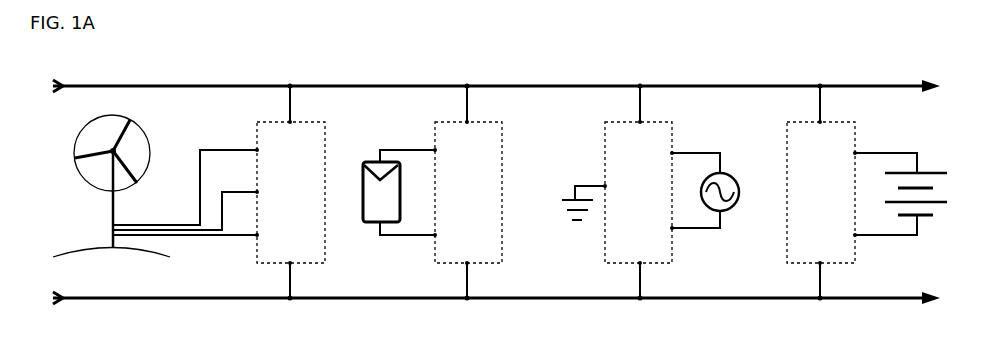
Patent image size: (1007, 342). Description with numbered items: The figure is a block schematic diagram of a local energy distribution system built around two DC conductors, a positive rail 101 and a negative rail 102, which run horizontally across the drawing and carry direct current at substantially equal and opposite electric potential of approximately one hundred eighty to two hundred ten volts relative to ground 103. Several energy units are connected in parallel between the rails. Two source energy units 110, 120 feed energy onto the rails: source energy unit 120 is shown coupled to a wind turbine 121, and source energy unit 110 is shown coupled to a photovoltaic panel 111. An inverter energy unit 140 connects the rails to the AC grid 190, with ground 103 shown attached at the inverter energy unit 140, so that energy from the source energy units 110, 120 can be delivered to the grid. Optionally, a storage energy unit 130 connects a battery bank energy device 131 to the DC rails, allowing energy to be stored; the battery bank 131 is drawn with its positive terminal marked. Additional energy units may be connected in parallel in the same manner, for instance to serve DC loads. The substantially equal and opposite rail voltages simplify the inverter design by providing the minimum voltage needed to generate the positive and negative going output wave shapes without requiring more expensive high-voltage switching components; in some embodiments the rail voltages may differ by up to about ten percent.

The positive rail 101 is at (496, 80).
The negative rail 102 is at (496, 304).
The ground 103 is at (584, 196).
The source energy unit 110 is at (456, 192).
The photovoltaic panel 111 is at (400, 192).
The source energy unit 120 is at (279, 192).
The wind turbine 121 is at (156, 186).
The storage energy unit 130 is at (809, 192).
The battery bank energy device 131 is at (900, 195).
The inverter energy unit 140 is at (627, 192).
The AC grid 190 is at (710, 190).